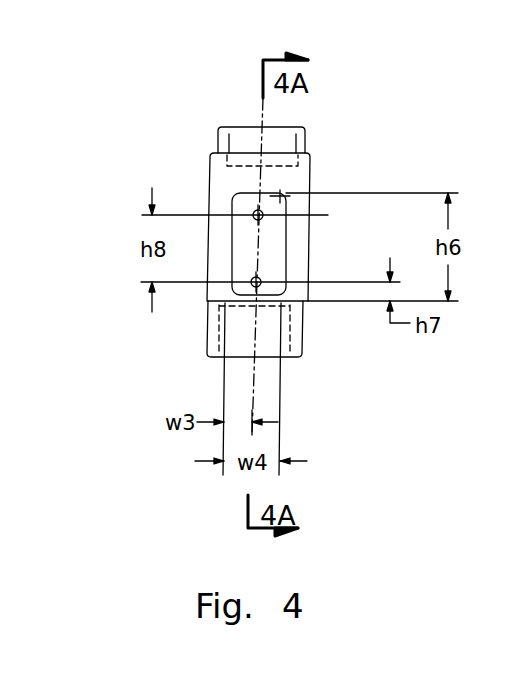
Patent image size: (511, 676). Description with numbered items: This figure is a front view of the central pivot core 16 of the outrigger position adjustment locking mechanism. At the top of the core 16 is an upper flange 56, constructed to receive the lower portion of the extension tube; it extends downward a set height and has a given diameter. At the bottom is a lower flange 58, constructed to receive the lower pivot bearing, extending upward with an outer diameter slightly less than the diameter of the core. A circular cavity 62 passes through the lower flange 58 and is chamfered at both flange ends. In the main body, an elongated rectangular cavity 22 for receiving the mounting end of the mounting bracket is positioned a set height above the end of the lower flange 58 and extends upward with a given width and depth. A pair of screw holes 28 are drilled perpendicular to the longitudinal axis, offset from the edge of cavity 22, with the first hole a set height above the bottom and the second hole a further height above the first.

The central pivot core 16 is at (187, 150).
The upper flange 56 is at (304, 128).
The cavity 22 is at (289, 191).
The screw holes 28 is at (262, 287).
The lower flange 58 is at (205, 352).
The circular cavity 62 is at (258, 360).